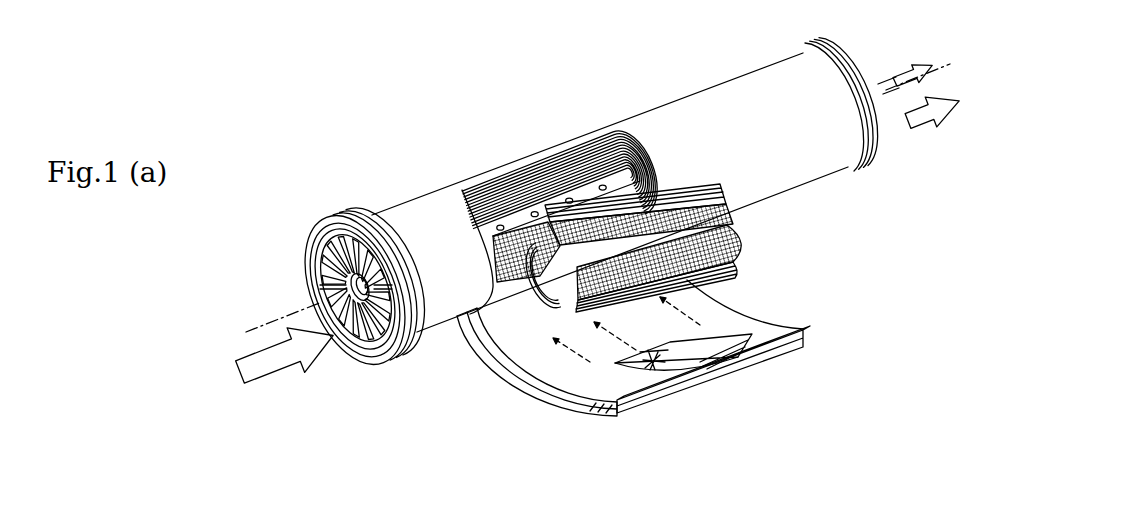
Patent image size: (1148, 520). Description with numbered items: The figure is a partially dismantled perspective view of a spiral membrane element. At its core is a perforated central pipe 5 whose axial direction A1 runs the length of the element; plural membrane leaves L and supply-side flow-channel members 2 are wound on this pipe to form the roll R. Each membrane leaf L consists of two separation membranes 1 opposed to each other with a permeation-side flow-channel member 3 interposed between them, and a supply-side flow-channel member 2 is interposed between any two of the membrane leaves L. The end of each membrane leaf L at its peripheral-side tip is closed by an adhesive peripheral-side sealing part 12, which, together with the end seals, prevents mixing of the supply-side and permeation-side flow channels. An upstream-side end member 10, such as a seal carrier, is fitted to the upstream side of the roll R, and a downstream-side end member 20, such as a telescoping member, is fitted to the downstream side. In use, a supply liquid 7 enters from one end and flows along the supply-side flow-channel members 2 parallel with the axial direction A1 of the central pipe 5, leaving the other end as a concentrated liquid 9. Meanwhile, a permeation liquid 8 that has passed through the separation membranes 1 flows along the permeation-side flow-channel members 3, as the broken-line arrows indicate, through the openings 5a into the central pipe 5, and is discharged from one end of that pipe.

The separation membrane 1 is at (732, 220).
The supply-side flow-channel member 2 is at (695, 190).
The permeation-side flow-channel member 3 is at (496, 333).
The perforated central pipe 5 is at (592, 197).
The openings 5a is at (500, 223).
The supply liquid 7 is at (265, 372).
The permeation liquid 8 is at (908, 70).
The concentrated liquid 9 is at (927, 120).
The upstream-side end member 10 is at (347, 207).
The peripheral-side sealing part 12 is at (700, 362).
The downstream-side end member 20 is at (863, 172).
The roll R is at (638, 100).
The membrane leaf L is at (780, 373).
The axial direction A1 is at (256, 326).